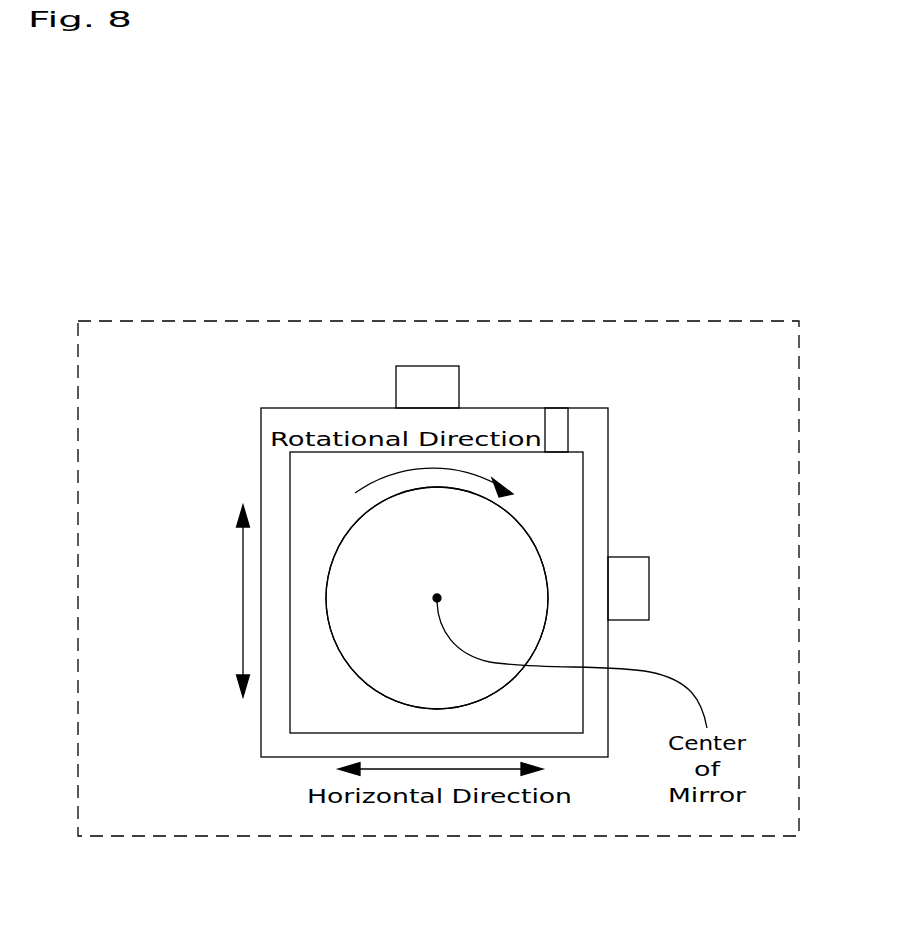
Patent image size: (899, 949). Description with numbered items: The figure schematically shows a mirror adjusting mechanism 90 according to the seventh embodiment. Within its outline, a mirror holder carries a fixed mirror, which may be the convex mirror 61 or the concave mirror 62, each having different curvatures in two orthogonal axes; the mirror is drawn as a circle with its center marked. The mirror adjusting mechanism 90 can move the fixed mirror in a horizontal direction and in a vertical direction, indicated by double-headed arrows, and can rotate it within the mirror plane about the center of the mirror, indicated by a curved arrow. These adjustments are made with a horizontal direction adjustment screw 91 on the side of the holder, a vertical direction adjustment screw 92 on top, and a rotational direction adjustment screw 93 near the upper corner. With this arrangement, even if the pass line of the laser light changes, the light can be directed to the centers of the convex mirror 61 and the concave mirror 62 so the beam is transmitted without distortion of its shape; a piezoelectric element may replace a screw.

The mirror adjusting mechanism 90 is at (603, 321).
The horizontal direction adjustment screw 91 is at (637, 592).
The vertical direction adjustment screw 92 is at (432, 395).
The rotational direction adjustment screw 93 is at (556, 422).
The convex mirror 61 is at (525, 558).
The concave mirror 62 is at (527, 578).